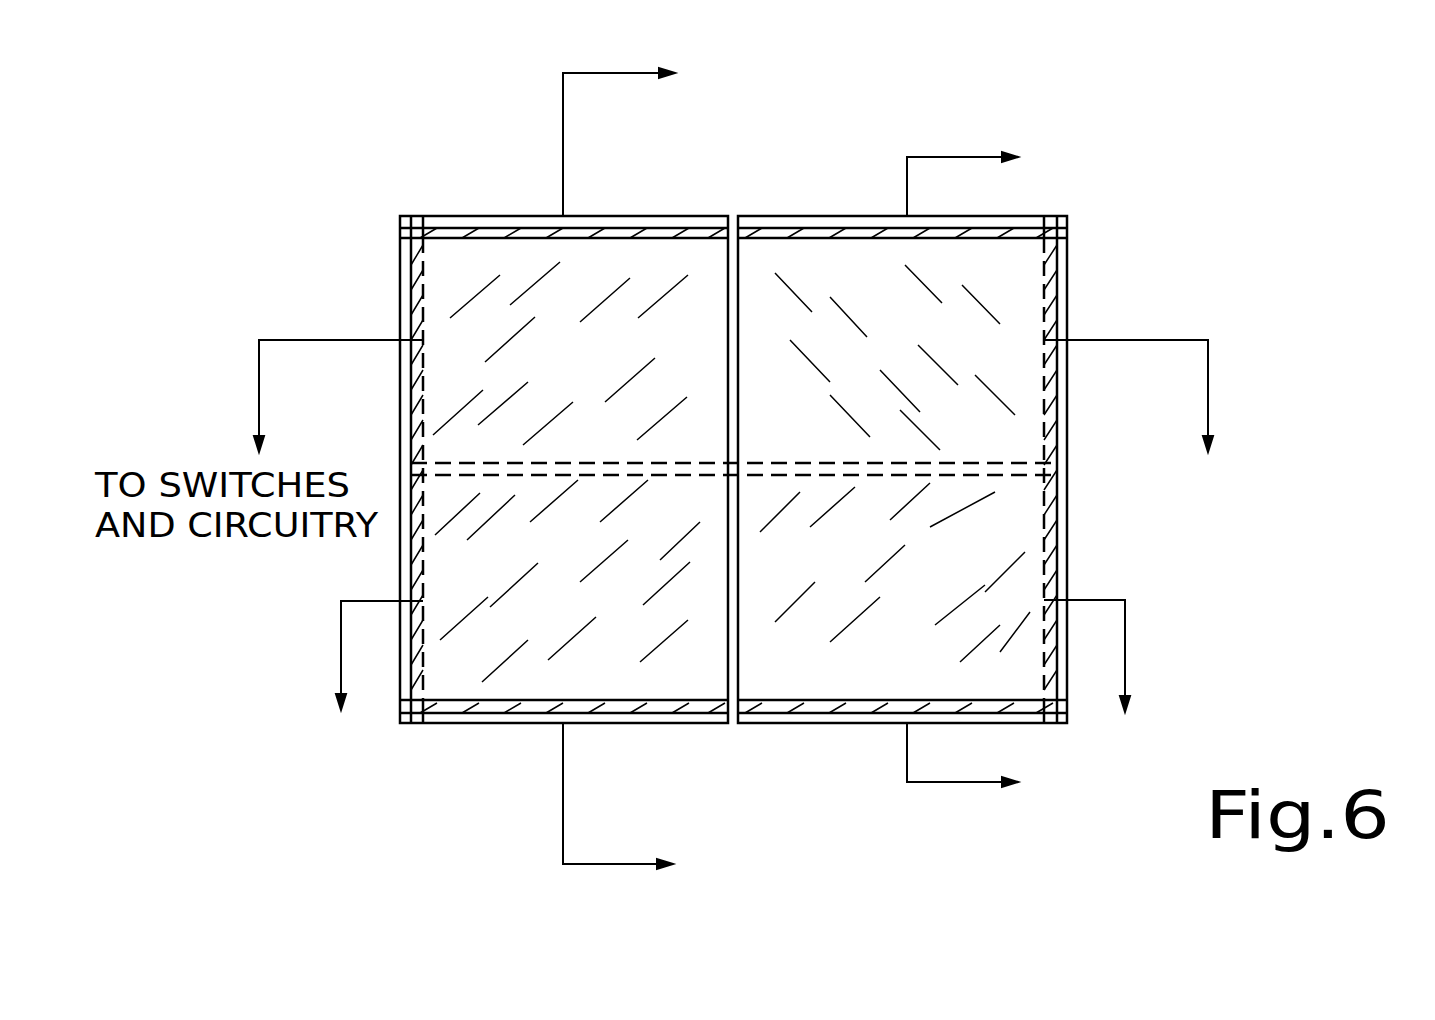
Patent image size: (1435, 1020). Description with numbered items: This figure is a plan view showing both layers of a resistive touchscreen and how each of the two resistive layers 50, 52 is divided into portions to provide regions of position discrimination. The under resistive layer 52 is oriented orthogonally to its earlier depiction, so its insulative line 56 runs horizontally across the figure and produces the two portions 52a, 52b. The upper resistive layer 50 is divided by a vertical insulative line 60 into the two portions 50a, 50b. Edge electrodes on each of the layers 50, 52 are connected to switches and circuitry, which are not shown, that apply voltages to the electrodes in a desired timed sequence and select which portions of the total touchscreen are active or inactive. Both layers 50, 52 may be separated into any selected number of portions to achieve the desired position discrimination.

The upper resistive layer 50 is at (1003, 254).
The portion of upper resistive layer 50a is at (600, 378).
The portion of upper resistive layer 50b is at (895, 463).
The under resistive layer 52 is at (516, 686).
The portion of under resistive layer 52a is at (665, 260).
The portion of under resistive layer 52b is at (395, 672).
The insulative line 56 is at (953, 478).
The insulative line 60 is at (738, 607).